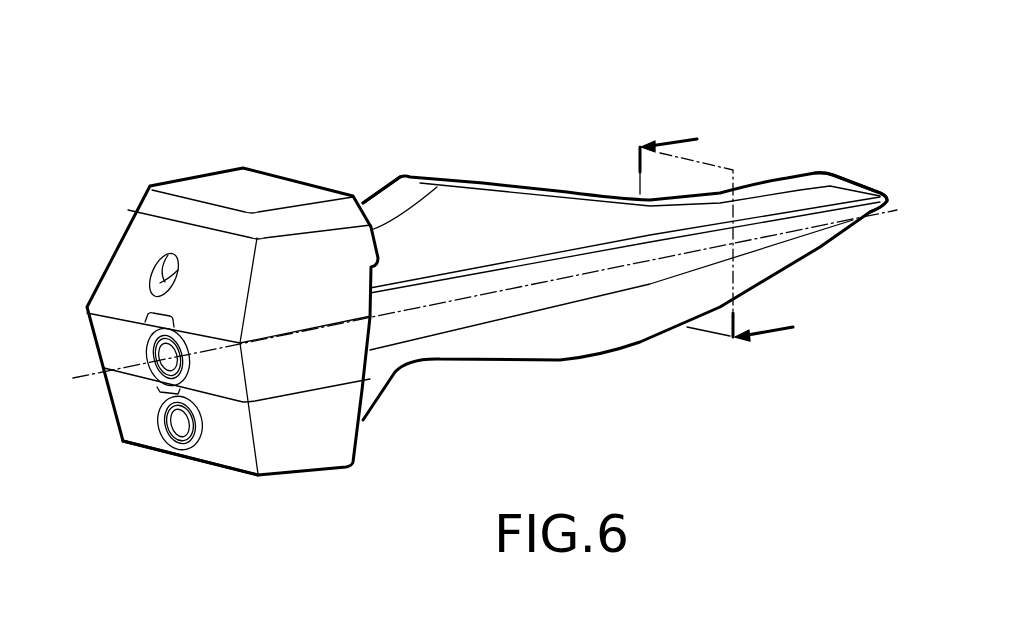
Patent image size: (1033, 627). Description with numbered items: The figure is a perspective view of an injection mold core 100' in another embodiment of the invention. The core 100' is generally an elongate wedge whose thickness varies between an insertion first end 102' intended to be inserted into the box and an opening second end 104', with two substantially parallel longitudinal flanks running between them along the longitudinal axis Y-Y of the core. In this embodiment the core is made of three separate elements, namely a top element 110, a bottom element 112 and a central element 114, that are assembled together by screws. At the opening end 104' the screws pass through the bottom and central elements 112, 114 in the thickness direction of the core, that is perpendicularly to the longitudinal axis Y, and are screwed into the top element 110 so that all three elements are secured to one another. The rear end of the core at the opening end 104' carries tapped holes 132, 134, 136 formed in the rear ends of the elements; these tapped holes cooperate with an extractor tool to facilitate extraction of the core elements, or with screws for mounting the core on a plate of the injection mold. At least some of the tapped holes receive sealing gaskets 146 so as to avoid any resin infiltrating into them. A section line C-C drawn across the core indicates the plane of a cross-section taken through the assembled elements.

The core 100' is at (625, 218).
The insertion first end 102' is at (876, 170).
The opening second end 104' is at (371, 165).
The top element 110 is at (485, 205).
The bottom element 112 is at (606, 325).
The central element 114 is at (565, 275).
The tapped hole 132 is at (150, 338).
The tapped hole 134 is at (156, 276).
The tapped hole 136 is at (172, 459).
The sealing gasket 146 is at (160, 365).
The longitudinal axis Y is at (485, 294).
The section line C is at (725, 234).